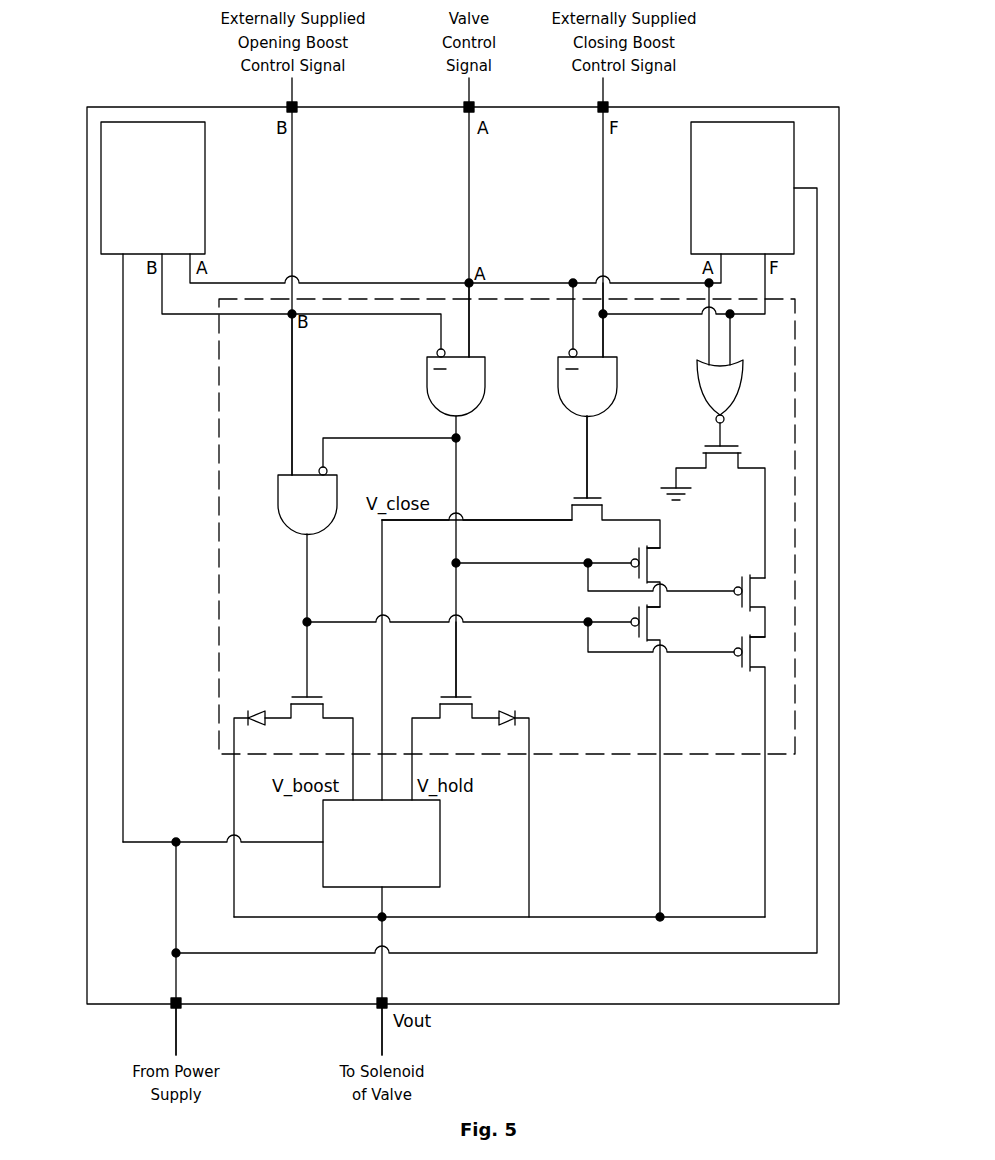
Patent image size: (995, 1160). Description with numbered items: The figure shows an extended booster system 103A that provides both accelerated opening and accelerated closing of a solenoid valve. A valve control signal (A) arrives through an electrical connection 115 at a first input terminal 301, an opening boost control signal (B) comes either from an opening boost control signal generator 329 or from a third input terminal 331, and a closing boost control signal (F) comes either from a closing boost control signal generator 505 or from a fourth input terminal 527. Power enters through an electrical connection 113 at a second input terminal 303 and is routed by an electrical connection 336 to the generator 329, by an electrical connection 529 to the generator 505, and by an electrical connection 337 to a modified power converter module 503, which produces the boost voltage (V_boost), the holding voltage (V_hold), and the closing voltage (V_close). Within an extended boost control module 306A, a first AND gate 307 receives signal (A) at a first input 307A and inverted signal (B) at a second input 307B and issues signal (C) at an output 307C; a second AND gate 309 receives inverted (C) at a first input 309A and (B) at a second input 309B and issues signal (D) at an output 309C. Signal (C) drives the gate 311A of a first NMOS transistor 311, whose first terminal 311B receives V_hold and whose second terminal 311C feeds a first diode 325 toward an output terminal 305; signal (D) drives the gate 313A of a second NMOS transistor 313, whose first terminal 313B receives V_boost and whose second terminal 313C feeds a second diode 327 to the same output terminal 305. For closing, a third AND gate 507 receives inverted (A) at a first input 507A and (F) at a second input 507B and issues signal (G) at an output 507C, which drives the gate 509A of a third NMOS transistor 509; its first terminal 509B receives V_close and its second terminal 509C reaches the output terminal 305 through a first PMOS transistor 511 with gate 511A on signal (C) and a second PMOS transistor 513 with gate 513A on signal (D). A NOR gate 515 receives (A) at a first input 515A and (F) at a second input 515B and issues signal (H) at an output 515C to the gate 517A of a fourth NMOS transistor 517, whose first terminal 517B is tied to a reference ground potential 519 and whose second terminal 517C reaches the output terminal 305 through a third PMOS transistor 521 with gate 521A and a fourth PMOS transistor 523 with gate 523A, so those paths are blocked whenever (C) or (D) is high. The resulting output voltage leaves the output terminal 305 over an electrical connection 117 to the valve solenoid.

The extended booster system 103A is at (765, 107).
The electrical connection 115 is at (469, 95).
The third input terminal 331 is at (297, 110).
The first input terminal 301 is at (464, 110).
The fourth input terminal 527 is at (598, 110).
The opening boost control signal generator 329 is at (205, 166).
The closing boost control signal generator 505 is at (691, 170).
The extended boost control module 306A is at (219, 388).
The first AND gate 307 is at (427, 386).
The first input 307A is at (470, 348).
The second input 307B is at (437, 352).
The output 307C is at (454, 425).
The third AND gate 507 is at (558, 386).
The first input 507A is at (569, 352).
The second input 507B is at (604, 352).
The output 507C is at (585, 425).
The NOR gate 515 is at (700, 395).
The first input 515A is at (706, 352).
The second input 515B is at (733, 352).
The output 515C is at (724, 418).
The fourth NMOS transistor 517 is at (703, 448).
The gate 517A is at (718, 432).
The first terminal 517B is at (676, 468).
The second terminal 517C is at (741, 465).
The reference ground potential 519 is at (672, 487).
The second AND gate 309 is at (278, 505).
The first input 309A is at (327, 470).
The second input 309B is at (289, 470).
The output 309C is at (305, 540).
The third NMOS transistor 509 is at (573, 503).
The gate 509A is at (584, 488).
The first terminal 509B is at (570, 518).
The second terminal 509C is at (604, 518).
The first PMOS transistor 511 is at (645, 552).
The gate 511A is at (631, 556).
The second PMOS transistor 513 is at (645, 610).
The gate 513A is at (560, 615).
The third PMOS transistor 521 is at (748, 580).
The gate 521A is at (734, 588).
The fourth PMOS transistor 523 is at (748, 640).
The gate 523A is at (734, 648).
The first NMOS transistor 311 is at (472, 700).
The gate 311A is at (454, 692).
The first terminal 311B is at (438, 716).
The second terminal 311C is at (505, 712).
The first diode 325 is at (499, 722).
The second NMOS transistor 313 is at (323, 700).
The gate 313A is at (305, 692).
The first terminal 313B is at (325, 716).
The second terminal 313C is at (289, 716).
The second diode 327 is at (262, 722).
The electrical connection 336 is at (123, 585).
The electrical connection 337 is at (300, 842).
The modified power converter module 503 is at (440, 836).
The electrical connection 529 is at (677, 953).
The second input terminal 303 is at (181, 1002).
The output terminal 305 is at (377, 1002).
The electrical connection 113 is at (176, 1027).
The electrical connection 117 is at (382, 1027).